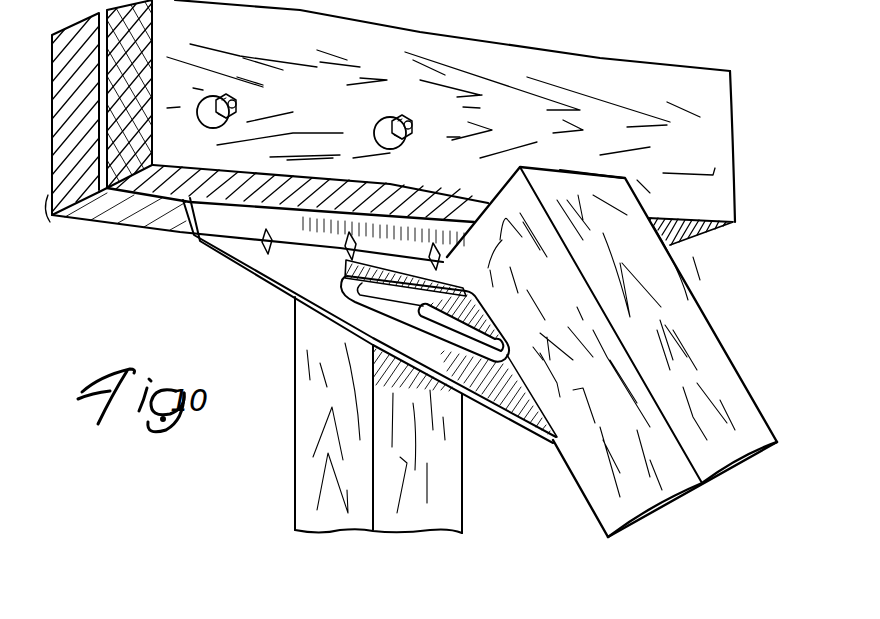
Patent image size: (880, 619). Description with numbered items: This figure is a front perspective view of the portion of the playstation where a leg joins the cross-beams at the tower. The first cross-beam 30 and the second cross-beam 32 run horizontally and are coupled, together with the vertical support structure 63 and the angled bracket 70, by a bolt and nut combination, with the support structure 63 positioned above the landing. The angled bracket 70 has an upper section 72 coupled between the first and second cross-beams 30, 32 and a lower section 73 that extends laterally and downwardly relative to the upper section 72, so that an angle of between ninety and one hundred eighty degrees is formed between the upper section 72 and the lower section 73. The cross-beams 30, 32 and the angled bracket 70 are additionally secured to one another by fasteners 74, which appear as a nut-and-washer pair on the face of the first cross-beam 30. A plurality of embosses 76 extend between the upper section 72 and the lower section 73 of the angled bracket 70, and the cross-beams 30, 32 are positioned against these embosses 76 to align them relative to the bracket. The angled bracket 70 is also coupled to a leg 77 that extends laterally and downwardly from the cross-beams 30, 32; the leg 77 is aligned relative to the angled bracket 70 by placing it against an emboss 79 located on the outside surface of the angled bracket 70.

The first cross-beam 30 is at (613, 64).
The second cross-beam 32 is at (259, 131).
The support structure 63 is at (300, 465).
The angled bracket 70 is at (523, 407).
The upper section 72 is at (202, 247).
The lower section 73 is at (292, 294).
The fasteners 74 is at (373, 127).
The embosses 76 is at (358, 248).
The leg 77 is at (707, 337).
The emboss 79 is at (480, 320).